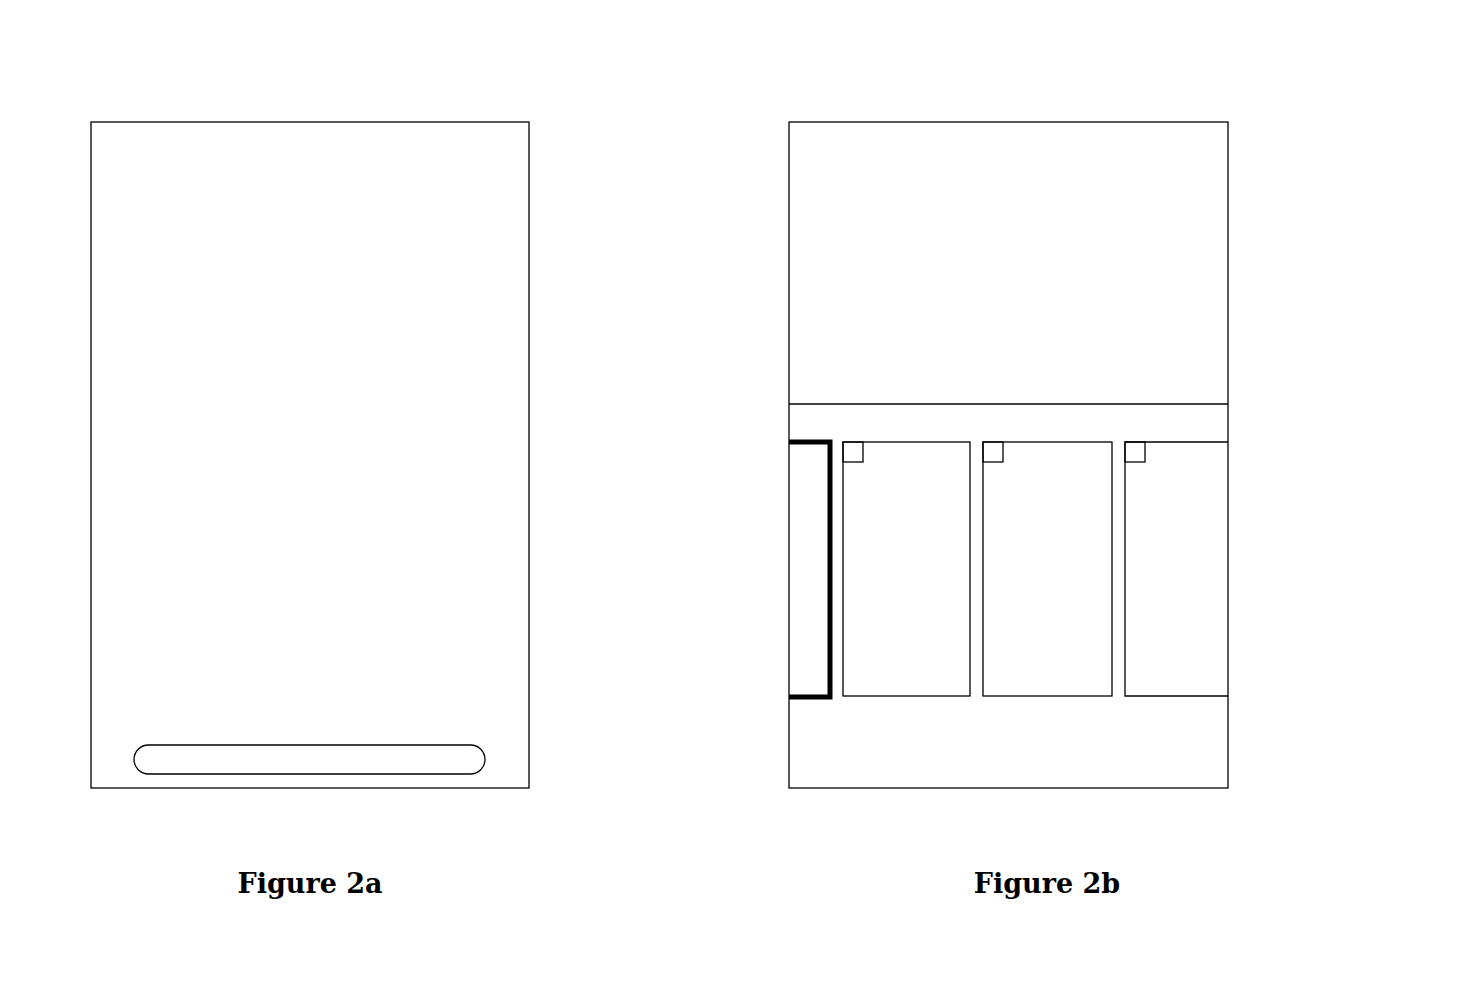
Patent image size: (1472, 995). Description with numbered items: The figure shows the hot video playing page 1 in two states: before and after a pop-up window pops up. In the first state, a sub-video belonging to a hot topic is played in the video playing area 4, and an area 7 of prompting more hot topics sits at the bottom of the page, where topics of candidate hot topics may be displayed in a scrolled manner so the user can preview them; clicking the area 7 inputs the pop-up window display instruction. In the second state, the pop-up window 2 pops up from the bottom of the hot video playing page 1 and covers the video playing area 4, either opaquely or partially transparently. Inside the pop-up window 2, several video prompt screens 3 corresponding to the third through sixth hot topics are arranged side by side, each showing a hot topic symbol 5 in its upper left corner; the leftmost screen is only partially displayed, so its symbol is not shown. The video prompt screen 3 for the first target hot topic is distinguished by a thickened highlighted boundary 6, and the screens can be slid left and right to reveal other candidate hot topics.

In FIG. 2A, the hot video playing page 1 is at (529, 165).
In FIG. 2B, the hot video playing page 1 is at (1228, 165).
In FIG. 2B, the pop-up window 2 is at (1165, 414).
In FIG. 2B, the video prompt screen 3 is at (1203, 575).
In FIG. 2A, the video playing area 4 is at (493, 243).
In FIG. 2B, the video playing area 4 is at (1192, 243).
In FIG. 2B, the hot topic symbol 5 is at (1145, 452).
In FIG. 2B, the highlighted boundary 6 is at (817, 439).
In FIG. 2A, the area of prompting more hot topics 7 is at (465, 757).